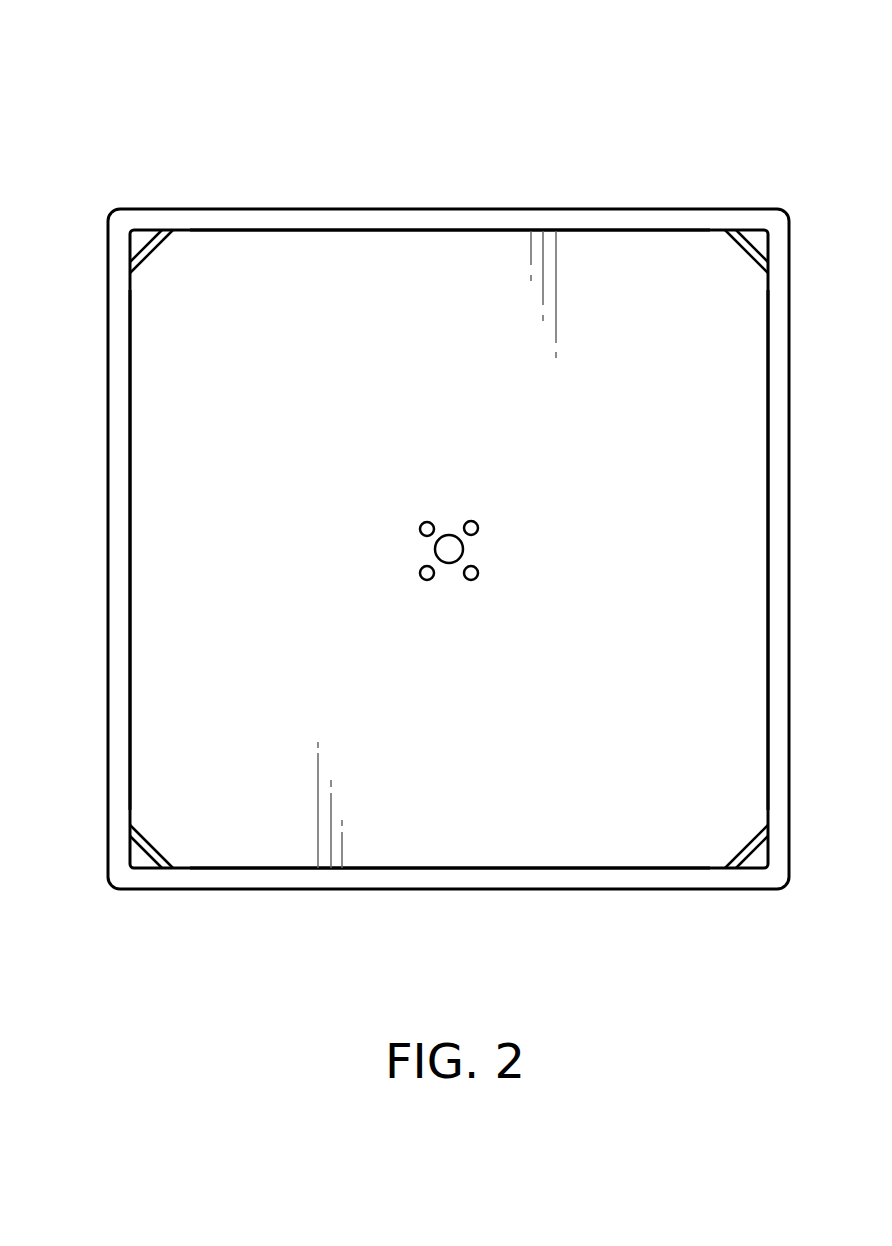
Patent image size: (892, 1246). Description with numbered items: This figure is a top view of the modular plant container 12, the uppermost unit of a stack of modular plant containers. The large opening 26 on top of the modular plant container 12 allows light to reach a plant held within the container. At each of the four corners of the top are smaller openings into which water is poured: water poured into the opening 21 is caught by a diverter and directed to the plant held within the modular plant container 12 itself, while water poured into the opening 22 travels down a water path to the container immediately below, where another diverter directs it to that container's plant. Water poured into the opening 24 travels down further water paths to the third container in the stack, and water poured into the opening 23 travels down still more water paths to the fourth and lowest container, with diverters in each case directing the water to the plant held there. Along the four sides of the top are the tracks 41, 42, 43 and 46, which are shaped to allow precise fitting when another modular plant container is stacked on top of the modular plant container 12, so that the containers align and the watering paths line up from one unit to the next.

The modular plant container 12 is at (689, 57).
The opening 21 is at (142, 860).
The opening 22 is at (152, 240).
The opening 23 is at (754, 238).
The opening 24 is at (752, 860).
The opening 26 is at (326, 327).
The track 41 is at (131, 714).
The track 42 is at (632, 231).
The track 43 is at (767, 702).
The track 46 is at (633, 868).